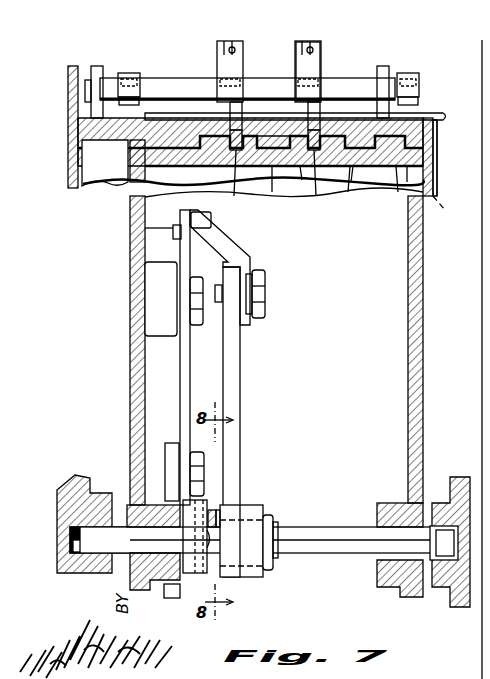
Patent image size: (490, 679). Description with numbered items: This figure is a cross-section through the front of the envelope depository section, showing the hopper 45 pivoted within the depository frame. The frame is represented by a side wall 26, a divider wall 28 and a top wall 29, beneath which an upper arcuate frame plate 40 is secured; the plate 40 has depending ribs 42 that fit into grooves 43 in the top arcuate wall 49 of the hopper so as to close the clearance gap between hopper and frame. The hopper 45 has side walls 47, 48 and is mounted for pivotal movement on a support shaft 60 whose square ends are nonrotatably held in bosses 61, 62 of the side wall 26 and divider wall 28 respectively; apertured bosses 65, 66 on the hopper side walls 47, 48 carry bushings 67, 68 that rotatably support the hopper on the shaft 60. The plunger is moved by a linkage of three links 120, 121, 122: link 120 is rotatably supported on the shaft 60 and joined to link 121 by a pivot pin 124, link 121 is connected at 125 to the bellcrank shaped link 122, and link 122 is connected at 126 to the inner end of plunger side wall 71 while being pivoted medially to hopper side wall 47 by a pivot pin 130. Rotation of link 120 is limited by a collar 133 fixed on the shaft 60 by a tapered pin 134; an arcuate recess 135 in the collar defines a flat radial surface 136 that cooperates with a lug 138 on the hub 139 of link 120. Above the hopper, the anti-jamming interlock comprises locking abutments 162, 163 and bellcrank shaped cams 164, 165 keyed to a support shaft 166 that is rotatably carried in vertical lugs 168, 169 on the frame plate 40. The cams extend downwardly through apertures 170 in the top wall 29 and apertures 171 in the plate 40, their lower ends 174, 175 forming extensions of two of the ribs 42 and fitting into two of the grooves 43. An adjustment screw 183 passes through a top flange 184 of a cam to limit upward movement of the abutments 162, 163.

The side wall 26 is at (72, 190).
The divider wall 28 is at (437, 186).
The top wall 29 is at (440, 116).
The upper arcuate frame plate 40 is at (436, 136).
The depending ribs 42 is at (348, 192).
The grooves 43 is at (398, 198).
The hopper 45 is at (118, 362).
The side wall 47 is at (132, 336).
The side wall 48 is at (414, 350).
The top arcuate wall 49 is at (272, 194).
The support shaft 60 is at (334, 556).
The boss 61 is at (100, 510).
The boss 62 is at (448, 596).
The apertured boss 65 is at (190, 582).
The apertured boss 66 is at (382, 503).
The bushing 67 is at (160, 600).
The bushing 68 is at (398, 580).
The side wall of plunger 71 is at (168, 443).
The link 120 is at (236, 390).
The link 121 is at (232, 242).
The bellcrank shaped link 122 is at (216, 346).
The pivot pin 124 is at (266, 300).
The pivotal connection 125 is at (145, 230).
The pivotal connection 126 is at (206, 478).
The pivot pin 130 is at (188, 298).
The collar 133 is at (226, 580).
The tapered pin 134 is at (216, 510).
The arcuate recess 135 is at (224, 512).
The flat radial surface 136 is at (241, 541).
The lug 138 is at (274, 514).
The hub 139 is at (263, 576).
The locking abutment 162 is at (447, 212).
The locking abutment 163 is at (122, 132).
The bellcrank shaped cam 164 is at (326, 78).
The bellcrank shaped cam 165 is at (212, 78).
The support shaft 166 is at (272, 86).
The vertical lug 168 is at (99, 66).
The vertical lug 169 is at (388, 70).
The apertures 170 is at (228, 114).
The apertures 171 is at (302, 118).
The lower end of cam 174 is at (234, 198).
The lower end of cam 175 is at (316, 198).
The adjustment screw 183 is at (217, 50).
The top flange 184 is at (296, 54).